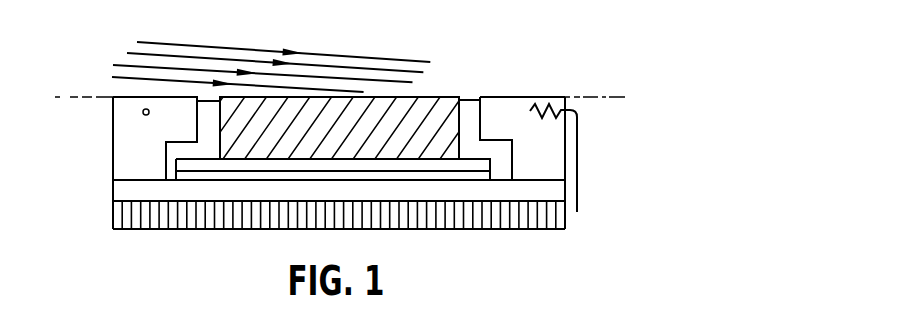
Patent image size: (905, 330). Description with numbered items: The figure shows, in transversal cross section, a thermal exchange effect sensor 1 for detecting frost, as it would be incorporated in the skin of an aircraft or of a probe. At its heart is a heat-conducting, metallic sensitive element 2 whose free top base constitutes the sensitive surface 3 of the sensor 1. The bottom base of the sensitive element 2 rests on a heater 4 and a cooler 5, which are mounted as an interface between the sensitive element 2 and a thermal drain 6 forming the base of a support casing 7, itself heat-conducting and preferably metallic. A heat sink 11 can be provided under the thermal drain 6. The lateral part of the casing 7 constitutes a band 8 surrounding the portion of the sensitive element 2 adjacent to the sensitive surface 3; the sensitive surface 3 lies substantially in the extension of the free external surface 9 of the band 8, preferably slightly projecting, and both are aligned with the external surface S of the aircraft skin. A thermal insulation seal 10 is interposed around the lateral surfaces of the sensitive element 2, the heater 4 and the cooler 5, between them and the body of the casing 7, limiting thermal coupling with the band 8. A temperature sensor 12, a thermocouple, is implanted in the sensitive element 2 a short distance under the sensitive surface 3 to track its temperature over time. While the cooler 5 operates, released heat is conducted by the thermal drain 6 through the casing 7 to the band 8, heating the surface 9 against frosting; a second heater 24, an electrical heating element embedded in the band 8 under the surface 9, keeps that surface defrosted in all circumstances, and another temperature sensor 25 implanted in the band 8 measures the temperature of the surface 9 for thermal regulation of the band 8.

The thermal exchange effect sensor 1 is at (104, 238).
The sensitive element 2 is at (265, 111).
The sensitive surface 3 is at (446, 97).
The heater 4 is at (219, 162).
The cooler 5 is at (241, 175).
The thermal drain 6 is at (422, 191).
The support casing 7 is at (100, 185).
The band 8 is at (126, 135).
The free external surface 9 is at (522, 97).
The thermal insulation seal 10 is at (472, 110).
The heat sink 11 is at (525, 217).
The temperature sensor 12 is at (340, 109).
The second heater 24 is at (545, 108).
The other temperature sensor 25 is at (145, 109).
The external surface S is at (73, 96).